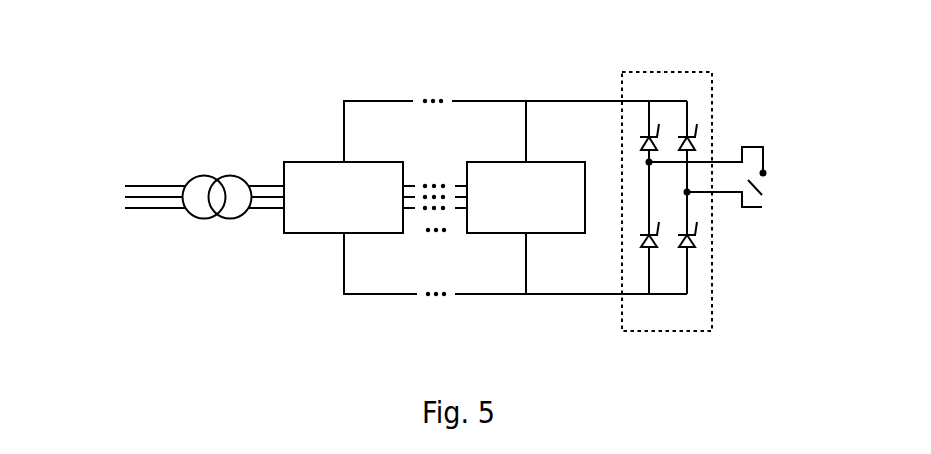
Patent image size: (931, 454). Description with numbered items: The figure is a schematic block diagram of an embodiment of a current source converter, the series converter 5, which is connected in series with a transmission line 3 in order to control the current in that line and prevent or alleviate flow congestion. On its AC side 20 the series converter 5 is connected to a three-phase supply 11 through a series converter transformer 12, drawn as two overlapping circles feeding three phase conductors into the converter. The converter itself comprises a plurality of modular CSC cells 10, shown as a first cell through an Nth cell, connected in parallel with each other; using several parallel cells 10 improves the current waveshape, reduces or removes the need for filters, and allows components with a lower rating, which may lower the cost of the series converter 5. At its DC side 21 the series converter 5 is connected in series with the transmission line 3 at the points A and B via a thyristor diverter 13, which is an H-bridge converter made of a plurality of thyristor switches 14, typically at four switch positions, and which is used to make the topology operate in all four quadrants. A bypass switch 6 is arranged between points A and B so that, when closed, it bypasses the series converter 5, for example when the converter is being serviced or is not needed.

The series converter 5 is at (281, 80).
The three-phase supply 11 is at (97, 114).
The series converter transformer 12 is at (192, 186).
The modular CSC cell 10 is at (284, 170).
The AC side 20 is at (285, 136).
The DC side 21 is at (569, 94).
The thyristor diverter 13 is at (692, 315).
The thyristor switch 14 is at (647, 147).
The transmission line 3 is at (763, 146).
The bypass switch 6 is at (762, 195).